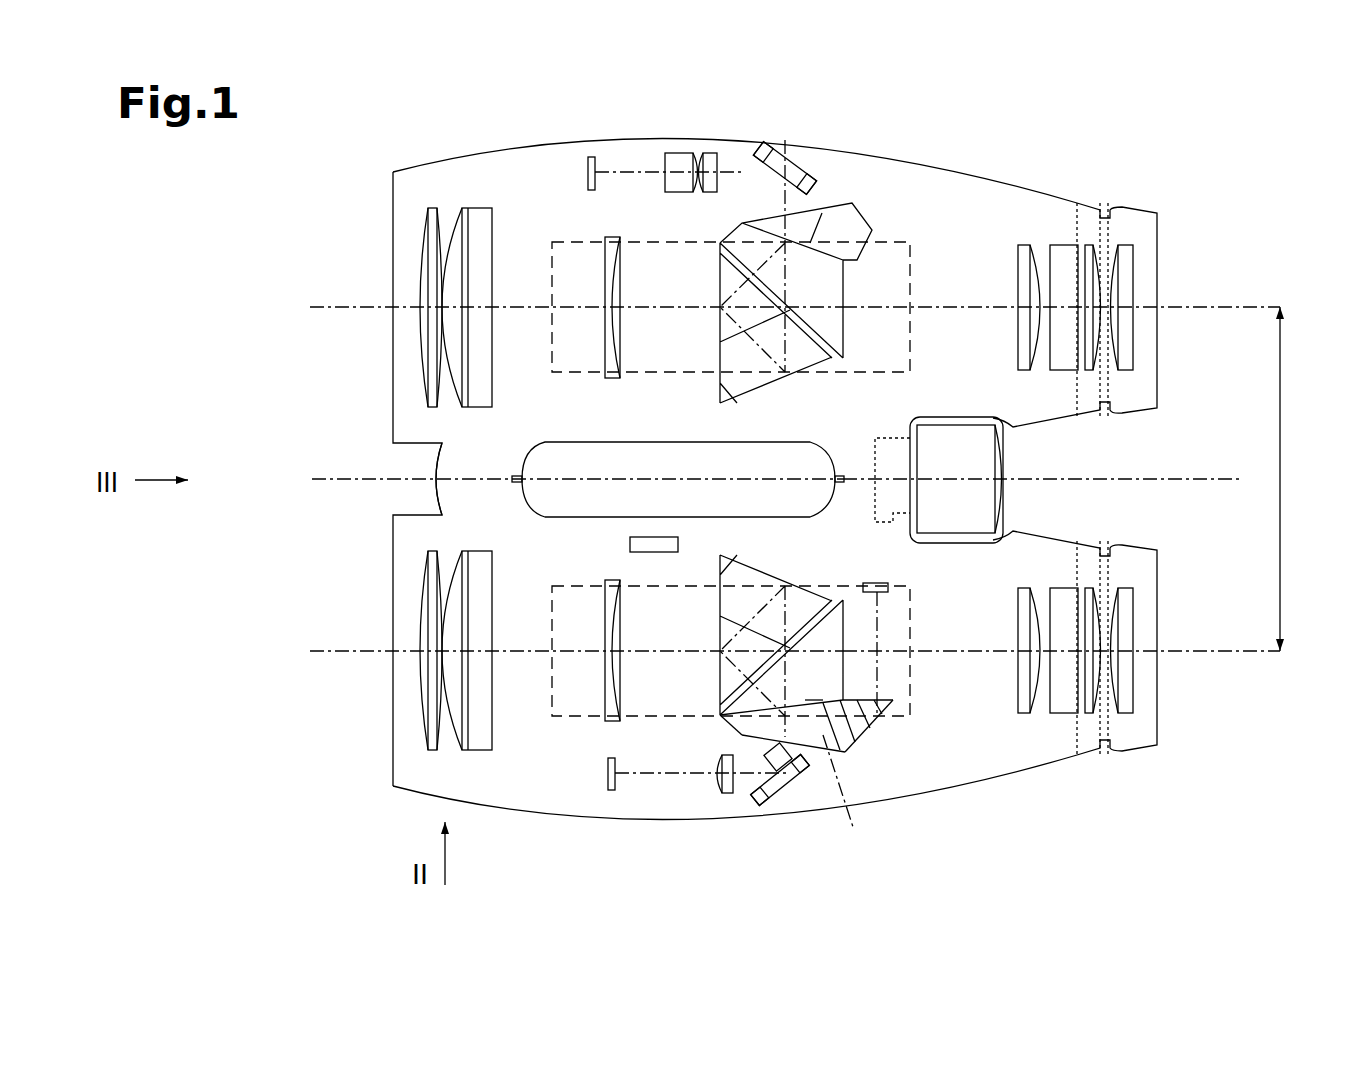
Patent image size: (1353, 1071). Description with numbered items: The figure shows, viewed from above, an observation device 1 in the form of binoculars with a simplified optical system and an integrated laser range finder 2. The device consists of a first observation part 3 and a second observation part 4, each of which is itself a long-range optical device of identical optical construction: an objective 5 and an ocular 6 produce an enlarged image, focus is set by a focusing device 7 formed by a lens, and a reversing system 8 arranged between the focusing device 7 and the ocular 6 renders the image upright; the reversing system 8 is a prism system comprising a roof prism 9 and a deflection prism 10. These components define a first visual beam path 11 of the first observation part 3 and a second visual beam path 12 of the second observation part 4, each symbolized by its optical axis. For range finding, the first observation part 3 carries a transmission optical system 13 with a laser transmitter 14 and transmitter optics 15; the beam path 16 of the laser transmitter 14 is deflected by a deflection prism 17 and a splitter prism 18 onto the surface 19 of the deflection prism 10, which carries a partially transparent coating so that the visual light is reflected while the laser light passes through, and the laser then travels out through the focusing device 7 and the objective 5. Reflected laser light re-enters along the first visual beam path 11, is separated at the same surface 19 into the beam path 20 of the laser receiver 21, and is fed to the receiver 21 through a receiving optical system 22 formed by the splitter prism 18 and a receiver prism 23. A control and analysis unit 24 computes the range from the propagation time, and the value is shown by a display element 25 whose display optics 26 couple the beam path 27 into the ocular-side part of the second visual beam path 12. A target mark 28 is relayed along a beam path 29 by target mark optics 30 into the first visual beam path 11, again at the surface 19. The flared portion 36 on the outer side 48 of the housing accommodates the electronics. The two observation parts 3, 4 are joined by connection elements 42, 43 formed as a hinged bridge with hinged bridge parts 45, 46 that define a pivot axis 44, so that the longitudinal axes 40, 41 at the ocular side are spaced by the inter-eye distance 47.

The observation device 1 is at (338, 812).
The laser range finder 2 is at (809, 796).
The first observation part 3 is at (975, 808).
The second observation part 4 is at (980, 162).
The objective 5 is at (387, 270).
The ocular 6 is at (1175, 240).
The focusing device 7 is at (610, 708).
The reversing system 8 is at (747, 552).
The roof prism 9 is at (735, 598).
The deflection prism 10 is at (736, 734).
The first visual beam path 11 is at (973, 652).
The second visual beam path 12 is at (980, 305).
The transmission optical system 13 is at (878, 786).
The laser transmitter 14 is at (798, 792).
The transmitter optics 15 is at (847, 752).
The beam path of the laser transmitter 16 is at (848, 796).
The deflection prism 17 is at (878, 753).
The splitter prism 18 is at (818, 745).
The surface 19 is at (750, 740).
The beam path of the laser receiver 20 is at (880, 628).
The receiver 21 is at (853, 580).
The receiving optical system 22 is at (913, 721).
The receiver prism 23 is at (880, 718).
The control and analysis unit 24 is at (630, 545).
The display element 25 is at (590, 150).
The display optics 26 is at (749, 153).
The beam path of the display optics 27 is at (738, 170).
The target mark 28 is at (608, 780).
The beam path to the target mark 29 is at (652, 773).
The target mark optics 30 is at (727, 800).
The flared portion 36 is at (552, 678).
The longitudinal axis 40 is at (337, 656).
The longitudinal axis 41 is at (337, 308).
The connection element 42 is at (860, 423).
The connection element 43 is at (412, 465).
The pivot axis 44 is at (1115, 470).
The hinged bridge part 45 is at (843, 505).
The hinged bridge part 46 is at (420, 423).
The distance 47 is at (1283, 582).
The outer side 48 is at (423, 795).